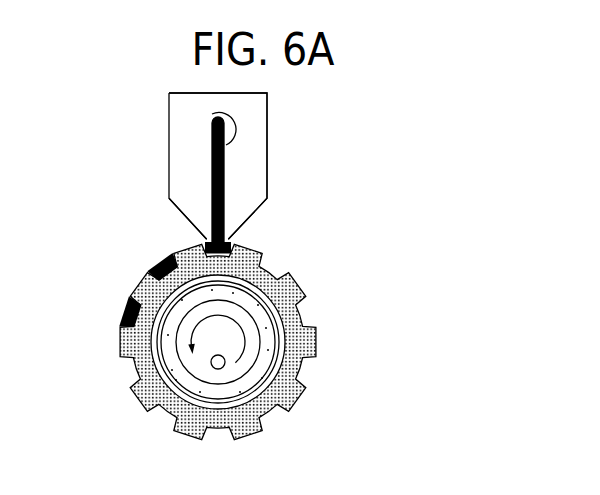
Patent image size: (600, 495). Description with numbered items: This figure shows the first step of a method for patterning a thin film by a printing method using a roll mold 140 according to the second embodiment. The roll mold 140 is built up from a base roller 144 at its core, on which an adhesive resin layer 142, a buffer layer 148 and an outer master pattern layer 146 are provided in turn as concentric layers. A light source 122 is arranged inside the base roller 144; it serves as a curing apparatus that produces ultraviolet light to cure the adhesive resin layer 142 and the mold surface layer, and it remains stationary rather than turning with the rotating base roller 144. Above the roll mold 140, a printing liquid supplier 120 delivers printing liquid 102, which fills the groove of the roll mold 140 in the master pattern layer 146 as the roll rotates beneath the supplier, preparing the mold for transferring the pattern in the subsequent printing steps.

The printing liquid 102 is at (155, 264).
The printing liquid supplier 120 is at (258, 155).
The light source 122 is at (225, 363).
The roll mold 140 is at (270, 341).
The adhesive resin layer 142 is at (267, 305).
The base roller 144 is at (375, 269).
The master pattern layer 146 is at (303, 315).
The buffer layer 148 is at (283, 342).